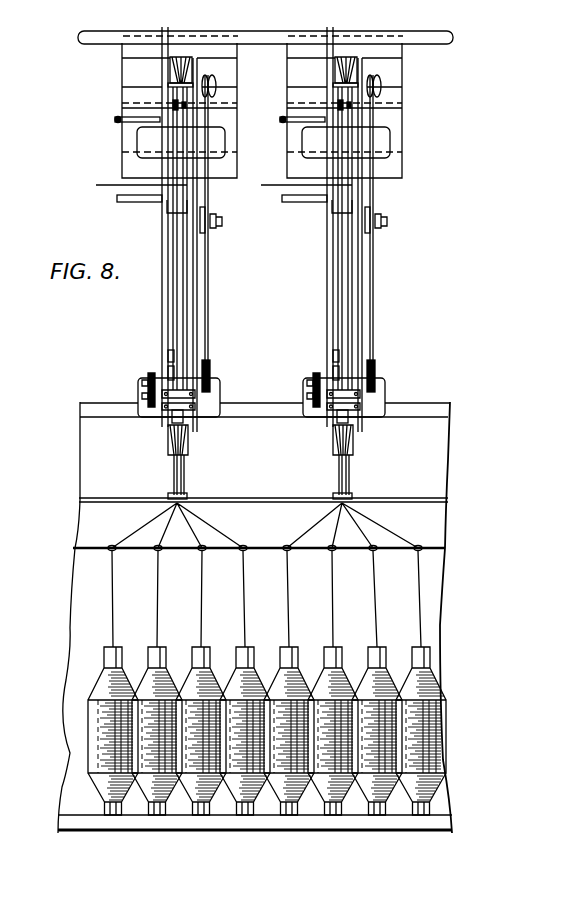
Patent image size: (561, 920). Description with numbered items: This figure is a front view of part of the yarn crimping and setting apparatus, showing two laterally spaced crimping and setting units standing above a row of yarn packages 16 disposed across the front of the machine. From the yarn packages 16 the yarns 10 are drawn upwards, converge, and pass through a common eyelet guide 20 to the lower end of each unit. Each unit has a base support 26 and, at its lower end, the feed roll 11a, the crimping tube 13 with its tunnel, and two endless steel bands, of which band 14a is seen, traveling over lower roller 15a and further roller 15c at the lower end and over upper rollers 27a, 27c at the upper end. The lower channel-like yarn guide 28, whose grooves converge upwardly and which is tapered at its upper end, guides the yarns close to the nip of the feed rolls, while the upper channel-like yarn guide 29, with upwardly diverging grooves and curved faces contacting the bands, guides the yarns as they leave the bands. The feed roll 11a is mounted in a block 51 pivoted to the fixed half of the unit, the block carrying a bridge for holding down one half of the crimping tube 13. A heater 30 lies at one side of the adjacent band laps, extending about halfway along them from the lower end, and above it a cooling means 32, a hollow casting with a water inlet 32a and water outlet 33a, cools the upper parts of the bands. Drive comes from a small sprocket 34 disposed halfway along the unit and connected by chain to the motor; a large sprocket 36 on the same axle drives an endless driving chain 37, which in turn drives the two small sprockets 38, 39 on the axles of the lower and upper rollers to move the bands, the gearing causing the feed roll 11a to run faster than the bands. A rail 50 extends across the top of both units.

The support rail 50 is at (114, 32).
The upper channel-like yarn guide 29 is at (184, 83).
The small sprocket 39 is at (214, 79).
The upper roller 27a is at (168, 85).
The upper roller 27c is at (172, 103).
The water outlet 33a is at (118, 119).
The cooling means 32 is at (212, 196).
The water inlet 32a is at (122, 203).
The large sprocket 36 is at (211, 213).
The small sprocket 34 is at (222, 222).
The endless driving chain 37 is at (209, 278).
The heater 30 is at (168, 304).
The base support 26 is at (198, 312).
The further roller 15c is at (167, 357).
The endless band 14a is at (183, 342).
The lower roller 15a is at (167, 372).
The small sprocket 38 is at (208, 370).
The crimping tube 13 is at (184, 393).
The block 51 is at (197, 402).
The feed roll 11a is at (176, 417).
The lower channel-like yarn guide 28 is at (188, 447).
The yarns 10 is at (183, 474).
The common eyelet guide 20 is at (186, 497).
The yarn packages 16 is at (328, 676).